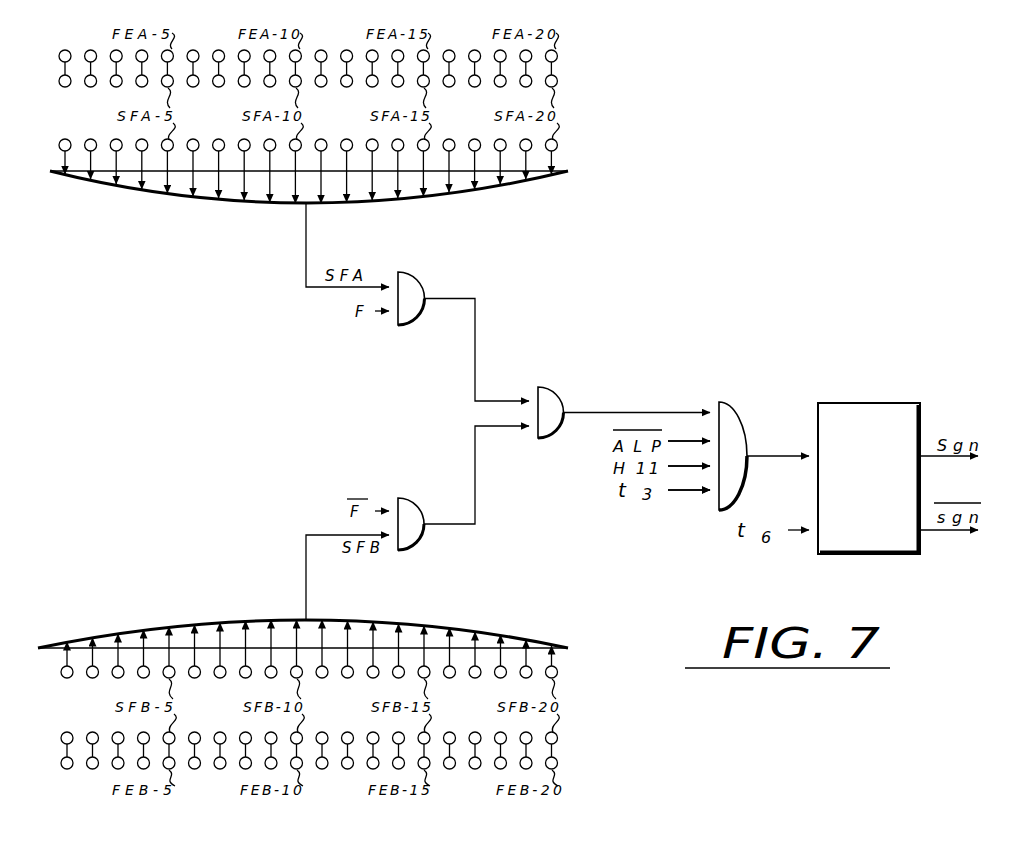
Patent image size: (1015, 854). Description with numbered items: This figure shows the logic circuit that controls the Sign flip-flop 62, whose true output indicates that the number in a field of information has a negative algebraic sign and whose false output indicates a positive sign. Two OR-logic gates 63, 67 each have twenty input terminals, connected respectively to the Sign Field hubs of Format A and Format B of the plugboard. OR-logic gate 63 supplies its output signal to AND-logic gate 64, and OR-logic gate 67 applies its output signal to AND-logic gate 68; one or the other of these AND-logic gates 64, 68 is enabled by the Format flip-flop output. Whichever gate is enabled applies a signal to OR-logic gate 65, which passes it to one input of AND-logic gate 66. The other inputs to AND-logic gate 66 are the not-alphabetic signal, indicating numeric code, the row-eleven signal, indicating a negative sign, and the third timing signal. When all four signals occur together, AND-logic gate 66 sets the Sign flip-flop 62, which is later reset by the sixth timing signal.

The Sign flip-flop 62 is at (832, 405).
The OR-logic gate 63 is at (433, 187).
The AND-logic gate 64 is at (416, 297).
The OR-logic gate 65 is at (557, 412).
The AND-logic gate 66 is at (735, 430).
The OR-logic gate 67 is at (457, 637).
The AND-logic gate 68 is at (415, 521).